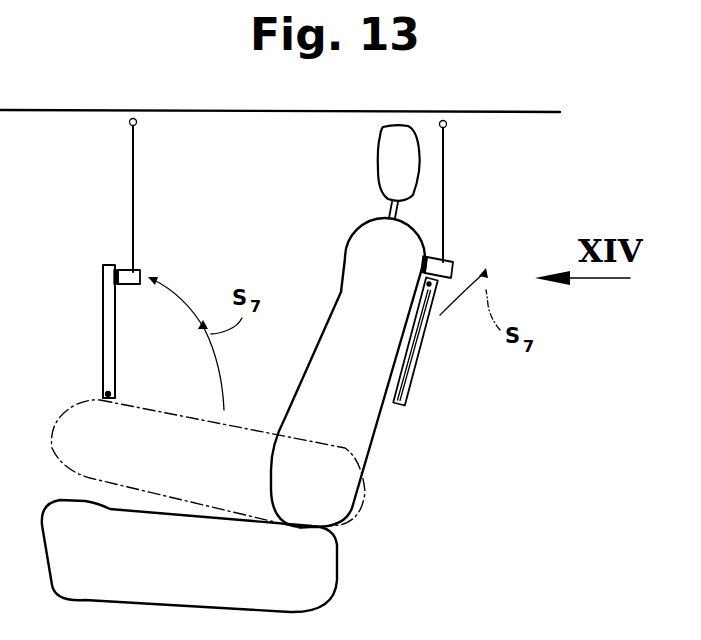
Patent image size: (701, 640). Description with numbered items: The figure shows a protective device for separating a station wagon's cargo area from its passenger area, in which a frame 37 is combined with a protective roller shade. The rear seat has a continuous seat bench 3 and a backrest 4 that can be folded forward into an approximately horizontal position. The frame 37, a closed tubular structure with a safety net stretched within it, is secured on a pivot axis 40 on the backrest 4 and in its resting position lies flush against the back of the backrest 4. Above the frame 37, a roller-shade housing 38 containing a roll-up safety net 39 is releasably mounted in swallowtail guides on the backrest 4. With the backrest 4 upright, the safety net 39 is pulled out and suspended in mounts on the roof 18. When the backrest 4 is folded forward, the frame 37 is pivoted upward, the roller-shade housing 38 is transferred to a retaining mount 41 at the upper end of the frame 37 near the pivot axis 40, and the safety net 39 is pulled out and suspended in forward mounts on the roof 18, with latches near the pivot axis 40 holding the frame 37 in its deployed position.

The roof 18 is at (46, 114).
The safety net 39 is at (136, 182).
The roller-shade housing 38 is at (142, 271).
The pivot axis 40 is at (103, 395).
The frame 37 is at (408, 379).
The retaining mount 41 is at (119, 285).
The backrest 4 is at (300, 410).
The seat bench 3 is at (243, 590).